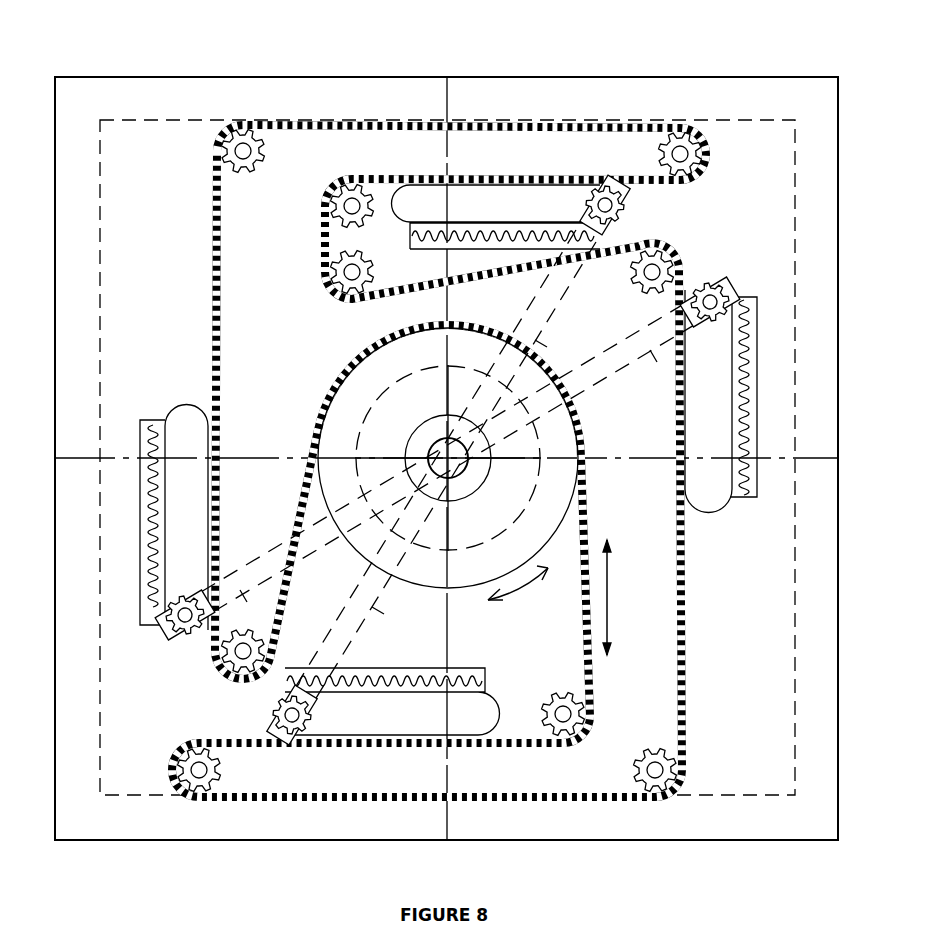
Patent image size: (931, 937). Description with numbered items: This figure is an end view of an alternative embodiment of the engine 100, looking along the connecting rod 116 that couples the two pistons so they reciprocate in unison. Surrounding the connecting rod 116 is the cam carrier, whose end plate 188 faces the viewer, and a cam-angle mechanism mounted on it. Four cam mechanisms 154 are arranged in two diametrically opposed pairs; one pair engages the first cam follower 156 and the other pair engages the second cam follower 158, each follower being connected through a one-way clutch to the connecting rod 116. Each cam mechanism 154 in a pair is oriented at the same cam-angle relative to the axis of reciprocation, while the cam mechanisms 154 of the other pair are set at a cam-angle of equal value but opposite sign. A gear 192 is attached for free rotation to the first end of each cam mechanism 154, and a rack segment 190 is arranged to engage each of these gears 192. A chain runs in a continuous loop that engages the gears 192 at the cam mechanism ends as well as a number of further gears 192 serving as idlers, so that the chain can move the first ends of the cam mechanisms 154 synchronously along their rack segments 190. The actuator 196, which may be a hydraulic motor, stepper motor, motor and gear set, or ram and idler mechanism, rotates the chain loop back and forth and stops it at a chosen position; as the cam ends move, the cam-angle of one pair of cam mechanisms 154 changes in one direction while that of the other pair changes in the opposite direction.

The engine 100 is at (463, 33).
The connecting rod 116 is at (437, 443).
The cam mechanism 154 is at (610, 205).
The first cam follower 156 is at (588, 395).
The second cam follower 158 is at (367, 617).
The end plate 188 is at (604, 840).
The rack segment 190 is at (483, 247).
The gear 192 is at (240, 130).
The actuator 196 is at (333, 440).